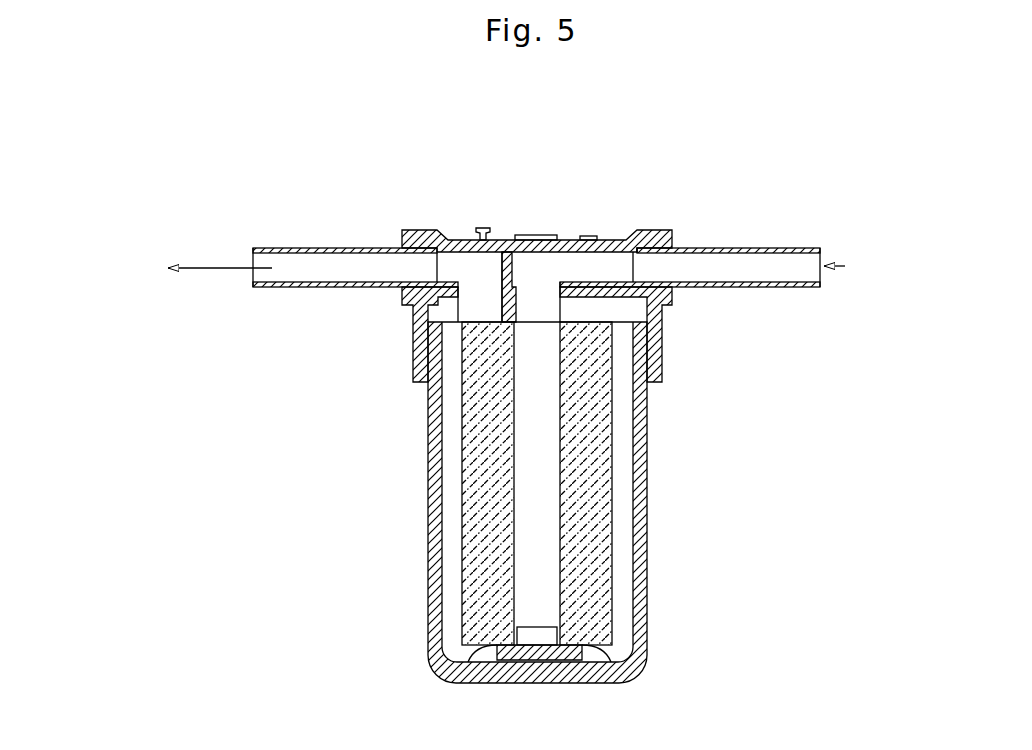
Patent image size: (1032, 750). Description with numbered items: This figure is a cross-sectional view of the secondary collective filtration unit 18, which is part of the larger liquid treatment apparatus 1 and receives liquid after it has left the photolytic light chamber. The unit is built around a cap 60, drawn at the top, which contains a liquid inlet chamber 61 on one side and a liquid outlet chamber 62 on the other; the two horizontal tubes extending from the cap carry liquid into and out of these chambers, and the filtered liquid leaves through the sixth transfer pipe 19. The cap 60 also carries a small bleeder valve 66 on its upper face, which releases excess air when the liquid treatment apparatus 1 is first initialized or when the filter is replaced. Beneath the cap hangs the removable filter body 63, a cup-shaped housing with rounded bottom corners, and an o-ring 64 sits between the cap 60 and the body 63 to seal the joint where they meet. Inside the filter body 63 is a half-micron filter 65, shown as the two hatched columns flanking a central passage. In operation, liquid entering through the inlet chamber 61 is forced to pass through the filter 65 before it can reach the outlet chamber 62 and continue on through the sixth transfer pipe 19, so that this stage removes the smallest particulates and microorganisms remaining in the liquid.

The liquid treatment apparatus 1 is at (750, 234).
The secondary collective filtration unit 18 is at (250, 400).
The sixth transfer pipe 19 is at (315, 236).
The cap 60 is at (505, 236).
The liquid inlet chamber 61 is at (592, 256).
The liquid outlet chamber 62 is at (481, 284).
The removable filter body 63 is at (652, 522).
The o-ring 64 is at (646, 336).
The 0.5 micron filter 65 is at (592, 569).
The bleeder valve 66 is at (483, 232).